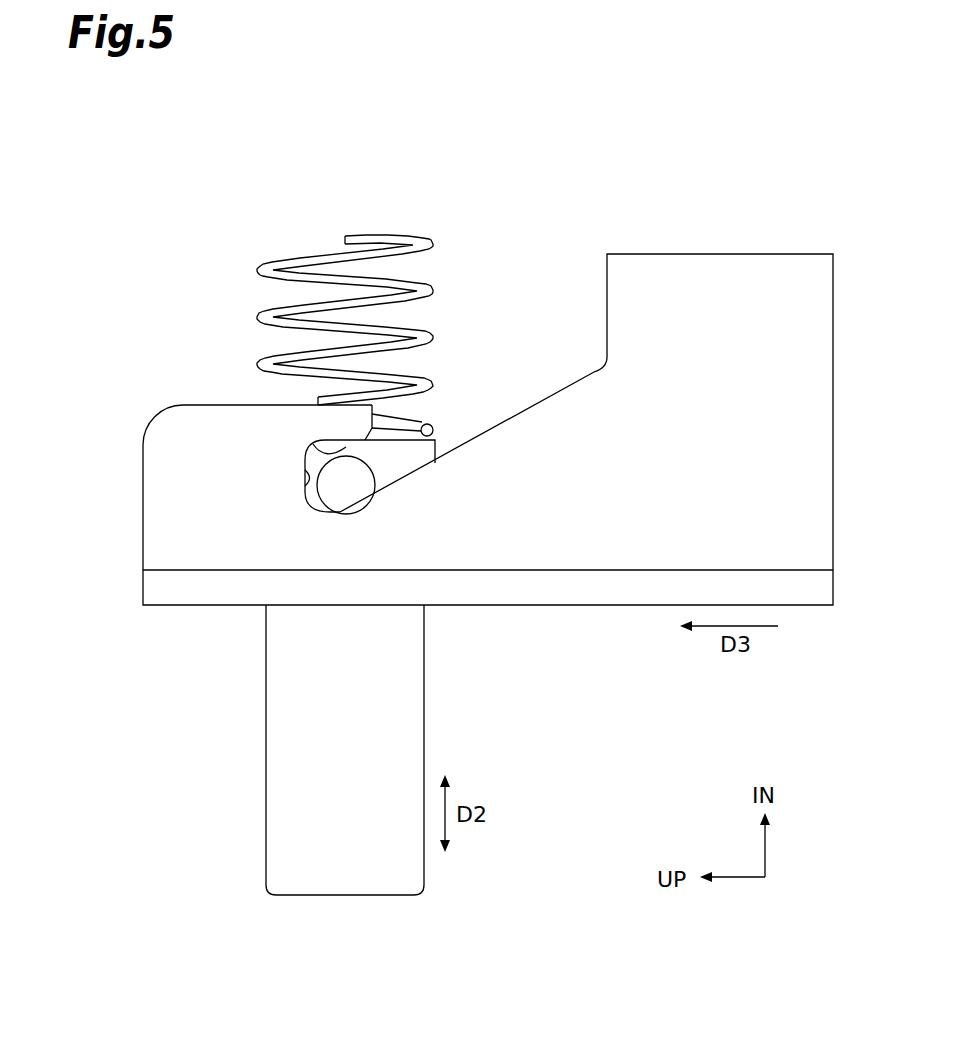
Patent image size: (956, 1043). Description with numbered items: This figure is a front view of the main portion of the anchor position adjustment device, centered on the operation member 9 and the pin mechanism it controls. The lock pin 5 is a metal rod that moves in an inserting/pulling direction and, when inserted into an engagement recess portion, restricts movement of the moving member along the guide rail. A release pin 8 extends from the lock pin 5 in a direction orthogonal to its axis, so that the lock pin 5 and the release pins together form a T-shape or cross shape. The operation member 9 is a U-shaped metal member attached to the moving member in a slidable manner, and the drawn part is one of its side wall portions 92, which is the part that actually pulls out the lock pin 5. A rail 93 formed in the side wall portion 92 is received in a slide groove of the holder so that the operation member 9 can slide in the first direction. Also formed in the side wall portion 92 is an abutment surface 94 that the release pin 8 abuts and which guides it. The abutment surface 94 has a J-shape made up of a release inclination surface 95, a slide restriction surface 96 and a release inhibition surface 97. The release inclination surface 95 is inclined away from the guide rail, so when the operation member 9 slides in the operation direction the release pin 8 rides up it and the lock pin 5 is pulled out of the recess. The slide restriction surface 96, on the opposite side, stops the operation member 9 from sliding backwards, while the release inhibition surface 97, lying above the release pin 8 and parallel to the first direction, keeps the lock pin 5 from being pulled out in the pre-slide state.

The lock pin 5 is at (266, 789).
The release pin 8 is at (347, 483).
The operation member 9 is at (709, 252).
The side wall portion 92 is at (617, 495).
The rail 93 is at (543, 588).
The abutment surface 94 is at (322, 427).
The release inclination surface 95 is at (490, 430).
The slide restriction surface 96 is at (305, 486).
The release inhibition surface 97 is at (312, 443).